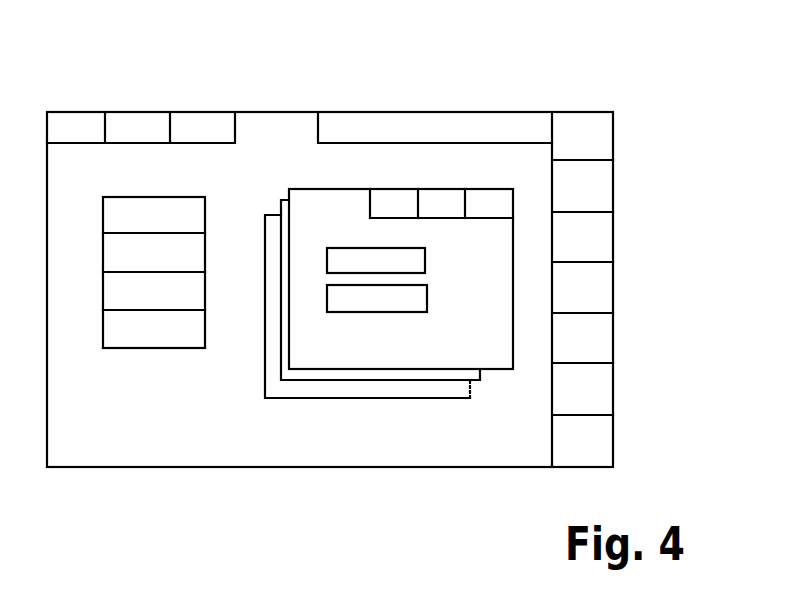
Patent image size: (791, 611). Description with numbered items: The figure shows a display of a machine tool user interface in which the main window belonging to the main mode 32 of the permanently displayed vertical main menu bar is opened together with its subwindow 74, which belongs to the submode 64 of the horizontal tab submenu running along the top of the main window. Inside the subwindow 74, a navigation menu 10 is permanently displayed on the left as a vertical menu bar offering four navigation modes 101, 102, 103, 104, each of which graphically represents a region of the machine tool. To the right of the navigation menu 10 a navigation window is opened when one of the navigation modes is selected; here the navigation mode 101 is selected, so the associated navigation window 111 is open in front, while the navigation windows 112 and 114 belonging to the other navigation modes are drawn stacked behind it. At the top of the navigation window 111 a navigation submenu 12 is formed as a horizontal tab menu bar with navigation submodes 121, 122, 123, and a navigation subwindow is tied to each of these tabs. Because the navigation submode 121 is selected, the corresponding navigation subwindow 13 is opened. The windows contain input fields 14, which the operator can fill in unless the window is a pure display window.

The subwindow 74 is at (413, 143).
The submode 64 is at (276, 130).
The main mode 32 is at (582, 289).
The navigation menu 10 is at (129, 255).
The navigation mode 101 is at (154, 222).
The navigation mode 102 is at (154, 260).
The navigation mode 103 is at (154, 298).
The navigation mode 104 is at (154, 336).
The navigation window 111 is at (310, 187).
The navigation window 112 is at (281, 205).
The navigation window 114 is at (265, 244).
The navigation subwindow 13 is at (308, 350).
The navigation submenu 12 is at (429, 184).
The navigation submode 121 is at (342, 205).
The navigation submode 122 is at (396, 204).
The navigation submode 123 is at (443, 204).
The input fields 14 is at (418, 262).